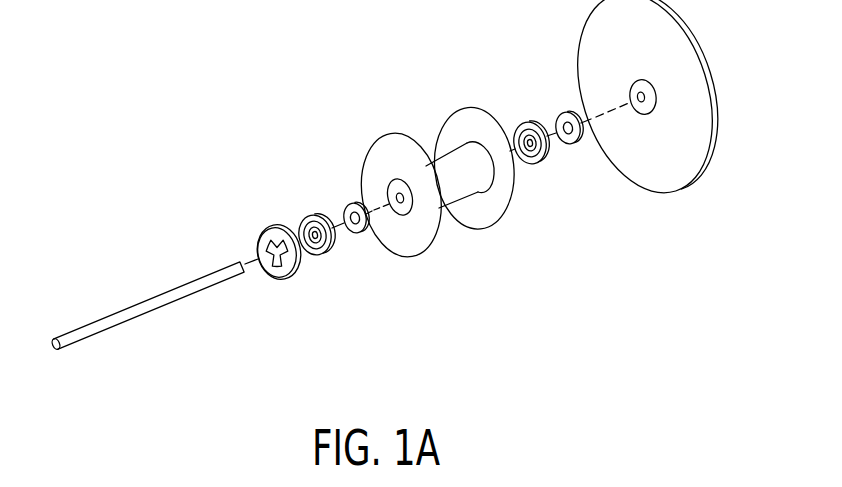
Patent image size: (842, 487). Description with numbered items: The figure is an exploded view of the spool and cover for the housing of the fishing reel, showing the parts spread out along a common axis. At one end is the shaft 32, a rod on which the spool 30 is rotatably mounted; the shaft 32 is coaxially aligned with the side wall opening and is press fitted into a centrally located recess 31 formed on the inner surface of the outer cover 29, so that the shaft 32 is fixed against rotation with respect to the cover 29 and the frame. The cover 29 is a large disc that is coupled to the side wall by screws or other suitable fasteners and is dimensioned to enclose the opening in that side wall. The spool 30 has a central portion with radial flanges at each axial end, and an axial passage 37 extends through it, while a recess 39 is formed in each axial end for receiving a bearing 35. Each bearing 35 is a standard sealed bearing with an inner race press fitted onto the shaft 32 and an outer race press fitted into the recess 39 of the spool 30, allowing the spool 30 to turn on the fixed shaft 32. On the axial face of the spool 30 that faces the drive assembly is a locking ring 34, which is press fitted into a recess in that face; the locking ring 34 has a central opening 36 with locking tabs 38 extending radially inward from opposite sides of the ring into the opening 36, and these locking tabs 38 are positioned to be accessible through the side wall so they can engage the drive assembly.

The outer cover 29 is at (645, 118).
The spool 30 is at (420, 206).
The recess 31 is at (638, 83).
The shaft 32 is at (98, 336).
The locking ring 34 is at (283, 254).
The bearing 35 is at (330, 252).
The central opening 36 is at (276, 273).
The axial passage 37 is at (397, 187).
The locking tabs 38 is at (275, 228).
The recess 39 is at (390, 194).